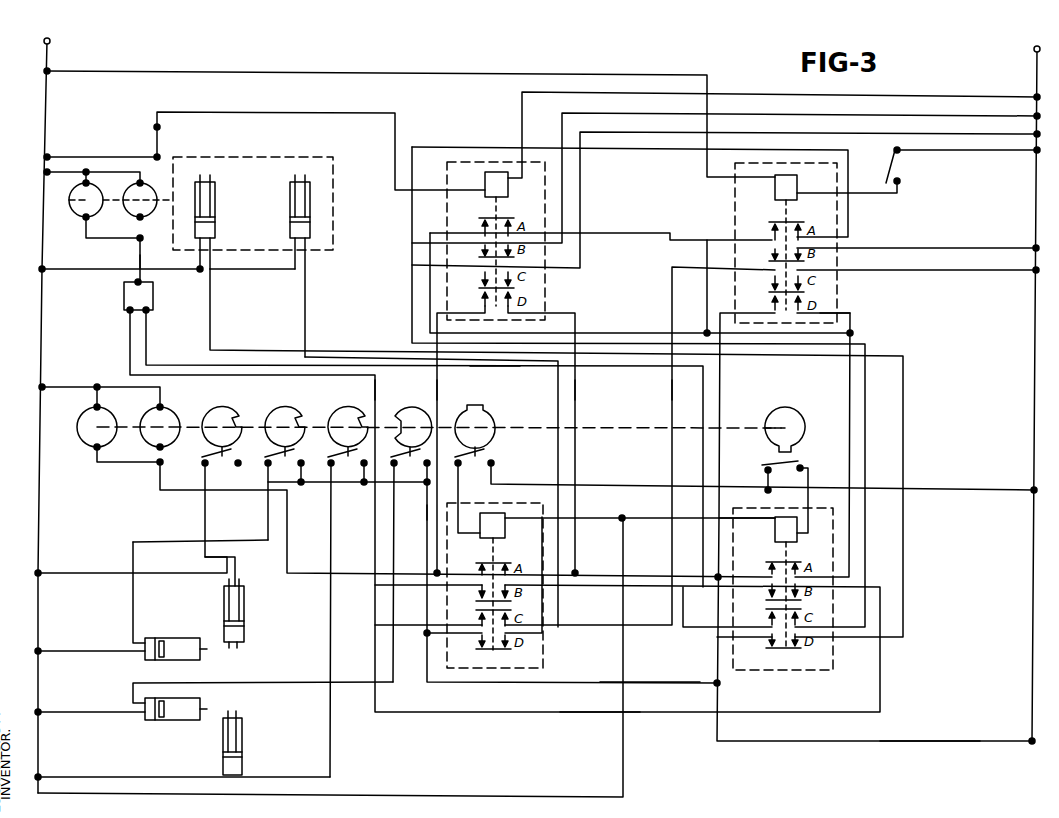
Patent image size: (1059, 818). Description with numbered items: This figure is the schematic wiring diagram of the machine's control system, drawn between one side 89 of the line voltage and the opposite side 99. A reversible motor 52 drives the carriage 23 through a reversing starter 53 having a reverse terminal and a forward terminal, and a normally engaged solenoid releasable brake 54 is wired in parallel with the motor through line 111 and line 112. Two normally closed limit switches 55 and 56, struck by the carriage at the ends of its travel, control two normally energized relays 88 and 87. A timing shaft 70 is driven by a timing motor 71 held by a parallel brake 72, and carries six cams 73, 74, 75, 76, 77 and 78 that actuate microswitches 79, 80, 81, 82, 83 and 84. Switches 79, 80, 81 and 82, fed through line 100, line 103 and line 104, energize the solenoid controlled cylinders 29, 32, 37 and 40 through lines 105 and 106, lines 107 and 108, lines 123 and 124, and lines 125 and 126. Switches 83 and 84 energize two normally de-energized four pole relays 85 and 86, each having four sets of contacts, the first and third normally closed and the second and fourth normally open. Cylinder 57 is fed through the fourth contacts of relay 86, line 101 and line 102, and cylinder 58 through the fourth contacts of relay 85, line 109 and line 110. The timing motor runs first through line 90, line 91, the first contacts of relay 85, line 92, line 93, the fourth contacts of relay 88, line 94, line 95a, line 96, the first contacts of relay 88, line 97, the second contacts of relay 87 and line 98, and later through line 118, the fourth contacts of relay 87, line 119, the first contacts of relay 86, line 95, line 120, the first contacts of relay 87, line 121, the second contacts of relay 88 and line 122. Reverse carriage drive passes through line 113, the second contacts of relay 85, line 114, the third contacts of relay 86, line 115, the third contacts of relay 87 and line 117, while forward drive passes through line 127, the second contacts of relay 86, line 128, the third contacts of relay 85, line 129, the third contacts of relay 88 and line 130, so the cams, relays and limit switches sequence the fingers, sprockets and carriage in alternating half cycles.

The carriage 23 is at (305, 160).
The solenoid controlled air cylinder 29 is at (248, 626).
The solenoid controlled air cylinder 32 is at (198, 636).
The solenoid controlled air cylinder 37 is at (244, 742).
The solenoid controlled cylinder 40 is at (192, 722).
The reversible motor 52 is at (130, 212).
The reversing starter 53 is at (130, 195).
The solenoid releasable brake 54 is at (78, 212).
The limit switch 55 is at (900, 168).
The limit switch 56 is at (160, 128).
The cylinder 57 is at (216, 215).
The cylinder 58 is at (289, 208).
The timing shaft 70 is at (600, 433).
The timing motor 71 is at (170, 410).
The solenoid releasable brake 72 is at (84, 444).
The timing cam 73 is at (226, 410).
The timing cam 74 is at (290, 410).
The timing cam 75 is at (352, 410).
The timing cam 76 is at (412, 410).
The timing cam 77 is at (482, 414).
The timing cam 78 is at (790, 416).
The microswitch 79 is at (216, 466).
The microswitch 80 is at (279, 466).
The microswitch 81 is at (342, 466).
The microswitch 82 is at (405, 466).
The microswitch 83 is at (468, 467).
The microswitch 84 is at (796, 464).
The four pole relay 85 is at (538, 671).
The four pole relay 86 is at (836, 553).
The relay 87 is at (540, 300).
The relay 88 is at (838, 223).
The side of the line voltage 89 is at (44, 126).
The line 90 is at (62, 387).
The line 91 is at (166, 494).
The line 92 is at (582, 574).
The line 93 is at (726, 400).
The line 94 is at (852, 322).
The line 95 is at (848, 384).
The line 95a is at (862, 333).
The line 96 is at (706, 302).
The line 97 is at (626, 148).
The line 98 is at (814, 98).
The side of the line voltage 99 is at (1034, 190).
The line 100 is at (932, 740).
The line 101 is at (210, 302).
The line 102 is at (188, 270).
The line 103 is at (690, 680).
The line 104 is at (426, 512).
The line 105 is at (206, 520).
The line 106 is at (66, 575).
The line 107 is at (138, 606).
The line 108 is at (104, 650).
The line 109 is at (305, 300).
The line 110 is at (278, 270).
The line 111 is at (57, 174).
The line 112 is at (140, 256).
The line 113 is at (376, 392).
The line 114 is at (690, 608).
The line 115 is at (866, 414).
The line 117 is at (772, 118).
The line 118 is at (438, 392).
The line 119 is at (586, 396).
The line 120 is at (646, 334).
The line 121 is at (668, 228).
The line 122 is at (940, 248).
The line 123 is at (332, 756).
The line 124 is at (106, 776).
The line 125 is at (302, 682).
The line 126 is at (104, 710).
The line 127 is at (490, 386).
The line 128 is at (602, 710).
The line 129 is at (674, 396).
The line 130 is at (950, 270).